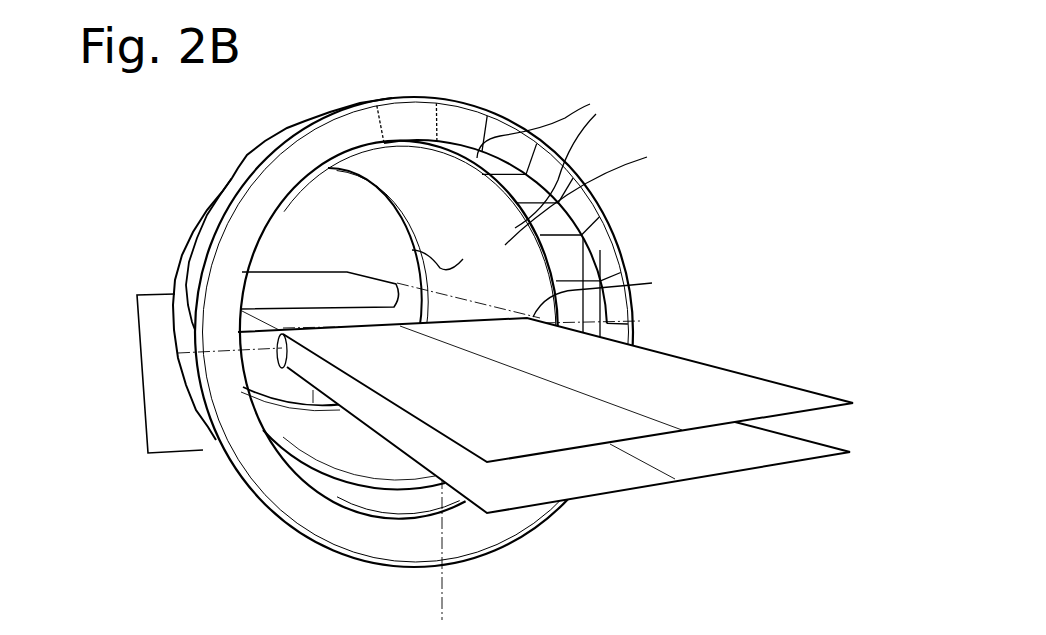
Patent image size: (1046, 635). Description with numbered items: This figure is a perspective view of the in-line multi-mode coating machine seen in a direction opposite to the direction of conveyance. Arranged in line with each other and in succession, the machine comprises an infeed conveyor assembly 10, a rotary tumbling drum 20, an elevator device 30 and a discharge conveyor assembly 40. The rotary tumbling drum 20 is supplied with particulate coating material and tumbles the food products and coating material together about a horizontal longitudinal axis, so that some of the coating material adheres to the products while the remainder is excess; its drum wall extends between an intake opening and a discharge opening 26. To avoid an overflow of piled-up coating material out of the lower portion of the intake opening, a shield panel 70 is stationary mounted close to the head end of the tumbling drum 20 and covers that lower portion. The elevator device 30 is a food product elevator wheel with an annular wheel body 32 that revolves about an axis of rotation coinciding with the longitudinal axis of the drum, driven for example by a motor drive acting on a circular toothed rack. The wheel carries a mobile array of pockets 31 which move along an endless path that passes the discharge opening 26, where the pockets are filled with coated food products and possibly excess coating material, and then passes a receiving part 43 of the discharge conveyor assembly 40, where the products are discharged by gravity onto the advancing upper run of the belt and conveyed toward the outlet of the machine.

The infeed conveyor assembly 10 is at (445, 339).
The rotary tumbling drum 20 is at (412, 250).
The discharge opening 26 is at (589, 193).
The elevator device 30 is at (525, 109).
The pockets 31 is at (502, 217).
The annular wheel body 32 is at (623, 228).
The discharge conveyor assembly 40 is at (655, 348).
The receiving part 43 is at (633, 290).
The shield panel 70 is at (158, 403).